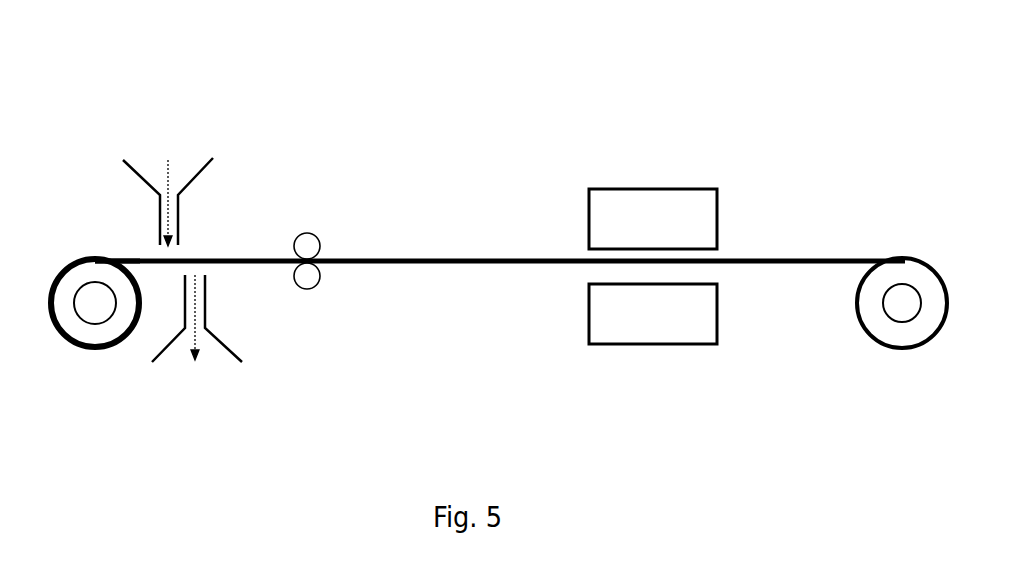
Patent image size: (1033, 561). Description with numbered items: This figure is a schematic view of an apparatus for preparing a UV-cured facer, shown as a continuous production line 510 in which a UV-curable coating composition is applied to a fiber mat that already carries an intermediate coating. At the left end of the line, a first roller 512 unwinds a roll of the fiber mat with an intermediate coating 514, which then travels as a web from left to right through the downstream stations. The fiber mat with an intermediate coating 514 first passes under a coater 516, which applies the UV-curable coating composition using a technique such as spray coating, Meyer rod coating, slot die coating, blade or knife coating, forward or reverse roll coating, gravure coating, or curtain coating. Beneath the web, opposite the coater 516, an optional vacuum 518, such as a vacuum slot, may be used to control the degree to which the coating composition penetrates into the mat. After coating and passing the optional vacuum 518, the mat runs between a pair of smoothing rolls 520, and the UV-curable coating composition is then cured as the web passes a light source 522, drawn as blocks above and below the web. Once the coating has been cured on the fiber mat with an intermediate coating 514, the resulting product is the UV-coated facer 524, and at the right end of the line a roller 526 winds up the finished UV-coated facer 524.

The production line 510 is at (145, 103).
The first roller 512 is at (66, 268).
The fiber mat with an intermediate coating 514 is at (130, 258).
The coater 516 is at (172, 145).
The vacuum 518 is at (185, 358).
The smoothing rolls 520 is at (310, 288).
The light source 522 is at (707, 185).
The UV-coated facer 524 is at (805, 257).
The roller 526 is at (908, 257).